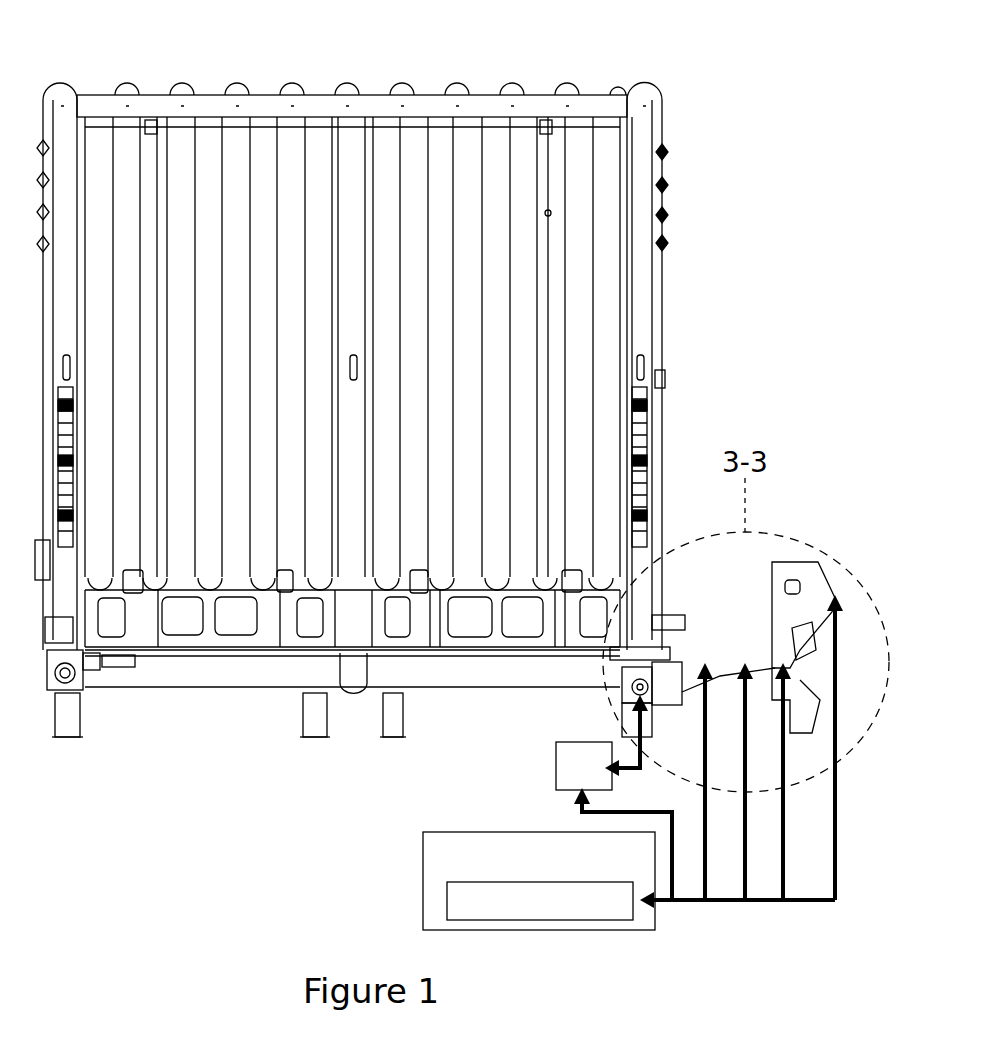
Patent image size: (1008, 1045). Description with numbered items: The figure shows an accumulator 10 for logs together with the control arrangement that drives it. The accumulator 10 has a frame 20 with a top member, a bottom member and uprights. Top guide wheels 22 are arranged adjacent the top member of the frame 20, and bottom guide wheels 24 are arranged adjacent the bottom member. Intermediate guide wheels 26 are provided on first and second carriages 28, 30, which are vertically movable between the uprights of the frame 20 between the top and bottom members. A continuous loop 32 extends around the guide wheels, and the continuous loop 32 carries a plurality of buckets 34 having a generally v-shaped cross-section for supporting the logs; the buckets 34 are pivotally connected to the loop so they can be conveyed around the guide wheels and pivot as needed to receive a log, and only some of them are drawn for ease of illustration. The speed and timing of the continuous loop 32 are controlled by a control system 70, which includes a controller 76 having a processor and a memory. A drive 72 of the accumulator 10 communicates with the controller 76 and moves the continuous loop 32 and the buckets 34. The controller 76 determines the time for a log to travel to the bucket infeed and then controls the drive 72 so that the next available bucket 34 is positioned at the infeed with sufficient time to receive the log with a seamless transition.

The accumulator 10 is at (716, 146).
The frame 20 is at (103, 96).
The top guide wheels 22 is at (468, 96).
The bottom guide wheels 24 is at (469, 688).
The intermediate guide wheels 26 is at (222, 583).
The first carriage 28 is at (143, 617).
The second carriage 30 is at (422, 617).
The continuous loop 32 is at (664, 331).
The buckets 34 is at (664, 244).
The control system 70 is at (423, 852).
The drive 72 is at (584, 766).
The controller 76 is at (450, 901).